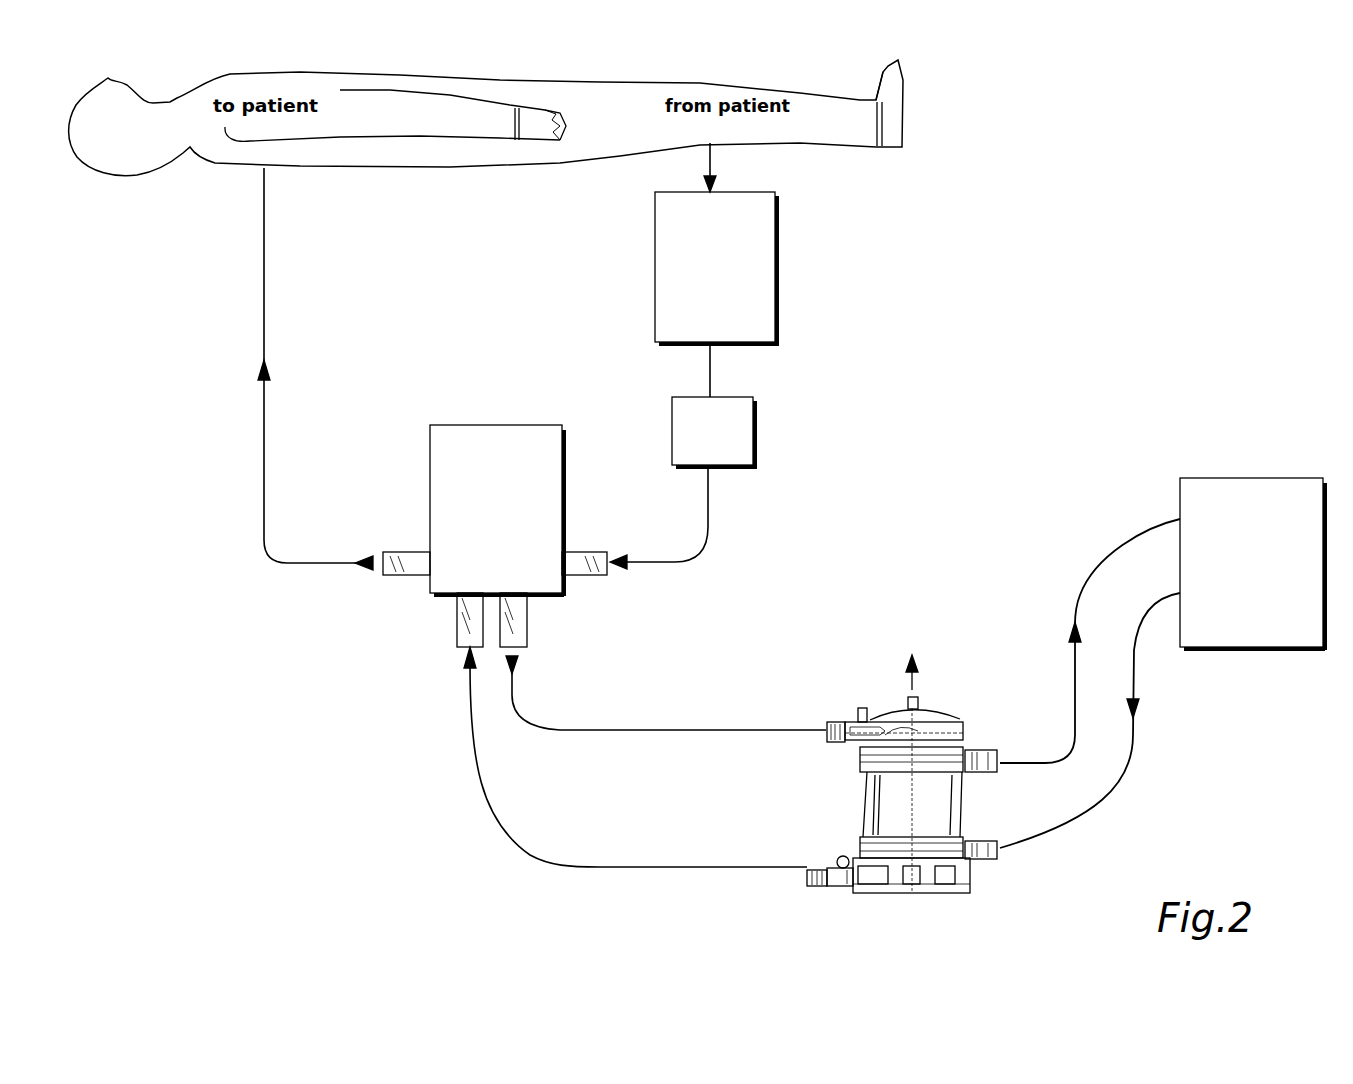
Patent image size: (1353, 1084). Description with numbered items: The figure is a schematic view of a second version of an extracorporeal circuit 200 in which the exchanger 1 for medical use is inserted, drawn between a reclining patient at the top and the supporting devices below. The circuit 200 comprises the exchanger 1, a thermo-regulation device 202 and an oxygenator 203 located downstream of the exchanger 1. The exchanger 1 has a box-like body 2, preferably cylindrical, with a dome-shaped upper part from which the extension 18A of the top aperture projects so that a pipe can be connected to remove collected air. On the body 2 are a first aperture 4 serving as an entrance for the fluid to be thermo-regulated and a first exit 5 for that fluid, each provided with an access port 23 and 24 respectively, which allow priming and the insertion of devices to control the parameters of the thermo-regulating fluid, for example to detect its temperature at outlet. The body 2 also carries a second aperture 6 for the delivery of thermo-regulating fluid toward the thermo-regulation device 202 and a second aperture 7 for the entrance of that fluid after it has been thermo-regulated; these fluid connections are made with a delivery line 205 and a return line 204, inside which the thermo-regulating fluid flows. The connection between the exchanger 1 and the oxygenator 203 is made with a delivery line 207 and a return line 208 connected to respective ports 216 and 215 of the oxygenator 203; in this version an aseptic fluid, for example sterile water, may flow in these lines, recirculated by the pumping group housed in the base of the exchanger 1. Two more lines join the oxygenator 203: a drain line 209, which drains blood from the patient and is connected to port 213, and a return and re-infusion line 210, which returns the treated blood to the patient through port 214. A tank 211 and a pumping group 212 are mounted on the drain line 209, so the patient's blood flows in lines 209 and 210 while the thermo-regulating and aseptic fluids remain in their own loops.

The extracorporeal circuit 200 is at (993, 345).
The return and re-infusion line 210 is at (267, 318).
The tank 211 is at (765, 240).
The pumping group 212 is at (748, 425).
The drain line 209 is at (710, 516).
The oxygenator 203 is at (470, 440).
The port 213 is at (585, 572).
The port 214 is at (410, 560).
The port 215 is at (522, 620).
The port 216 is at (455, 620).
The delivery line 207 is at (618, 866).
The return line 208 is at (683, 728).
The thermo-regulation device 202 is at (1230, 482).
The return line 204 is at (1117, 548).
The delivery line 205 is at (1136, 680).
The exchanger 1 is at (993, 690).
The extension 18A is at (885, 690).
The box-like body 2 is at (960, 825).
The access port 23 is at (866, 708).
The first aperture 4 is at (838, 722).
The second aperture 6 is at (985, 750).
The second aperture 7 is at (990, 862).
The access port 24 is at (855, 838).
The first exit 5 is at (840, 890).